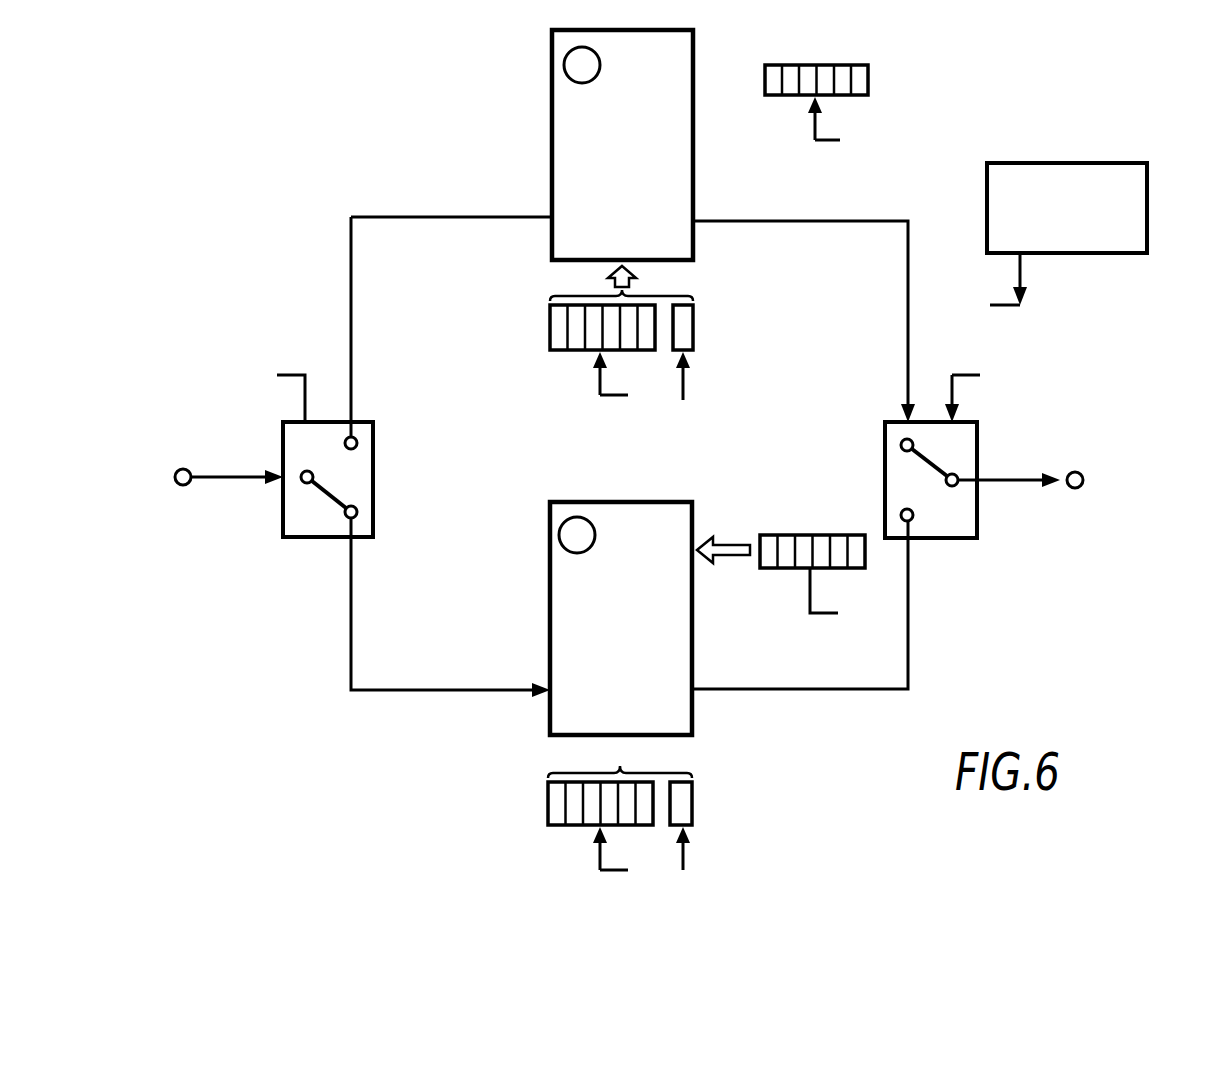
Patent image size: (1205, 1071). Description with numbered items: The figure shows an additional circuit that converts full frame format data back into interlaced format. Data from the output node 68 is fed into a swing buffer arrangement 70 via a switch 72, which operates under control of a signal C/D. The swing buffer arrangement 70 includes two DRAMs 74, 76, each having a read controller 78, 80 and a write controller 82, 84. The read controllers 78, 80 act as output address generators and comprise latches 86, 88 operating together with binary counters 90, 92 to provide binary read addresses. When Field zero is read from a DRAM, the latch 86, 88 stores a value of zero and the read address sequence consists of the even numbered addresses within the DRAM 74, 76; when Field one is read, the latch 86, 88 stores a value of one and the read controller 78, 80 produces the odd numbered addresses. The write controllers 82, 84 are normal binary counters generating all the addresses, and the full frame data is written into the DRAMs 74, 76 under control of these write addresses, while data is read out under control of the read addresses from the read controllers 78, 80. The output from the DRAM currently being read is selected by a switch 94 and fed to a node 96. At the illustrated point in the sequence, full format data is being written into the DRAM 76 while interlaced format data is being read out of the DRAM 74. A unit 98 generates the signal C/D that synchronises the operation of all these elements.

The output node 68 is at (172, 477).
The swing buffer arrangement 70 is at (360, 170).
The switch 72 is at (316, 538).
The DRAM 74 is at (552, 117).
The DRAM 76 is at (550, 600).
The read controller 78 is at (715, 342).
The read controller 80 is at (715, 809).
The write controller 82 is at (853, 532).
The write controller 84 is at (870, 82).
The latch 86 is at (675, 350).
The latch 88 is at (685, 795).
The binary counter 90 is at (550, 328).
The binary counter 92 is at (548, 806).
The switch 94 is at (950, 540).
The node 96 is at (1084, 478).
The unit 98 is at (1082, 163).